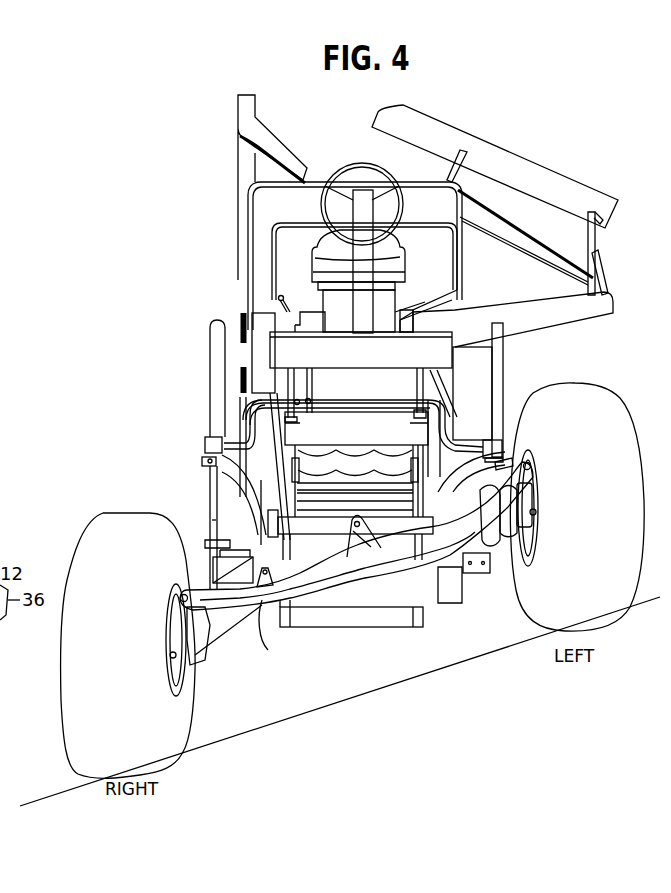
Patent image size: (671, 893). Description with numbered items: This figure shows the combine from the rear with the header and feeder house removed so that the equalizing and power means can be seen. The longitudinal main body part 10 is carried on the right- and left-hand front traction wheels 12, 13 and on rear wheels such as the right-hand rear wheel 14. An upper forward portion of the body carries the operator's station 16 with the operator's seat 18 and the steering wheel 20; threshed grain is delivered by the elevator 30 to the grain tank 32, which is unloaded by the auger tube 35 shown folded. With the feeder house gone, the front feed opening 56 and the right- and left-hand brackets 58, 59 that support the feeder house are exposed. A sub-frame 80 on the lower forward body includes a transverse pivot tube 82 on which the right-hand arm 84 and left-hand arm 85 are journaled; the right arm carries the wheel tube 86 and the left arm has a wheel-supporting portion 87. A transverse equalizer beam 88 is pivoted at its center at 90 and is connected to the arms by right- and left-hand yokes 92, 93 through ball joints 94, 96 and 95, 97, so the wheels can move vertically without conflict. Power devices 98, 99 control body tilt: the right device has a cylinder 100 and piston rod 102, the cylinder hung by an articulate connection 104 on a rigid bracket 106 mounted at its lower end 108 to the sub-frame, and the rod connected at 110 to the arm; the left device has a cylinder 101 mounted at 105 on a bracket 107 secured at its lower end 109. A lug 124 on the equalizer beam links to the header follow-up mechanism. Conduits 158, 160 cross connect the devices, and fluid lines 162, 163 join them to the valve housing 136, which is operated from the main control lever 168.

The main body part 10 is at (380, 443).
The right-hand front ground-engaging wheel 12 is at (107, 520).
The left-hand front ground-engaging wheel 13 is at (608, 398).
The right-hand rear ground-engaging wheel 14 is at (275, 632).
The operator's station 16 is at (447, 347).
The operator's seat 18 is at (400, 262).
The steering wheel 20 is at (374, 180).
The elevator 30 is at (246, 148).
The grain tank 32 is at (260, 200).
The unloading auger tube 35 is at (602, 308).
The front feed opening 56 is at (331, 451).
The right-hand bracket 58 is at (294, 457).
The left-hand bracket 59 is at (414, 457).
The sub-frame 80 is at (312, 534).
The transverse pivot tube 82 is at (210, 550).
The right-hand wheel-supported arm 84 is at (222, 578).
The left-hand wheel-supported arm 85 is at (478, 558).
The wheel tube 86 is at (173, 632).
The wheel-supporting portion 87 is at (520, 520).
The transverse equalizer beam 88 is at (340, 607).
The equalizer pivot 90 is at (360, 524).
The right-hand yoke 92 is at (185, 624).
The left-hand yoke 93 is at (532, 485).
The right-hand joint 94 is at (171, 657).
The left-hand joint 95 is at (536, 510).
The right-hand joint 96 is at (181, 597).
The left-hand joint 97 is at (532, 464).
The right-hand power-operated device 98 is at (202, 394).
The left-hand power-operated device 99 is at (512, 377).
The cylinder 100 is at (210, 428).
The cylinder 101 is at (504, 352).
The piston rod 102 is at (210, 494).
The articulate connection 104 is at (203, 461).
The cylinder mounting 105 is at (507, 457).
The rigid supporting bracket 106 is at (237, 483).
The supporting bracket 107 is at (478, 470).
The inner lower end 108 is at (233, 518).
The lower end 109 is at (438, 540).
The articulate connection 110 is at (212, 640).
The ear or lug 124 is at (265, 583).
The valve housing 136 is at (317, 327).
The conduit 158 is at (377, 402).
The conduit 160 is at (337, 405).
The fluid line 162 is at (308, 377).
The left-hand fluid line 163 is at (313, 377).
The main control lever 168 is at (290, 292).